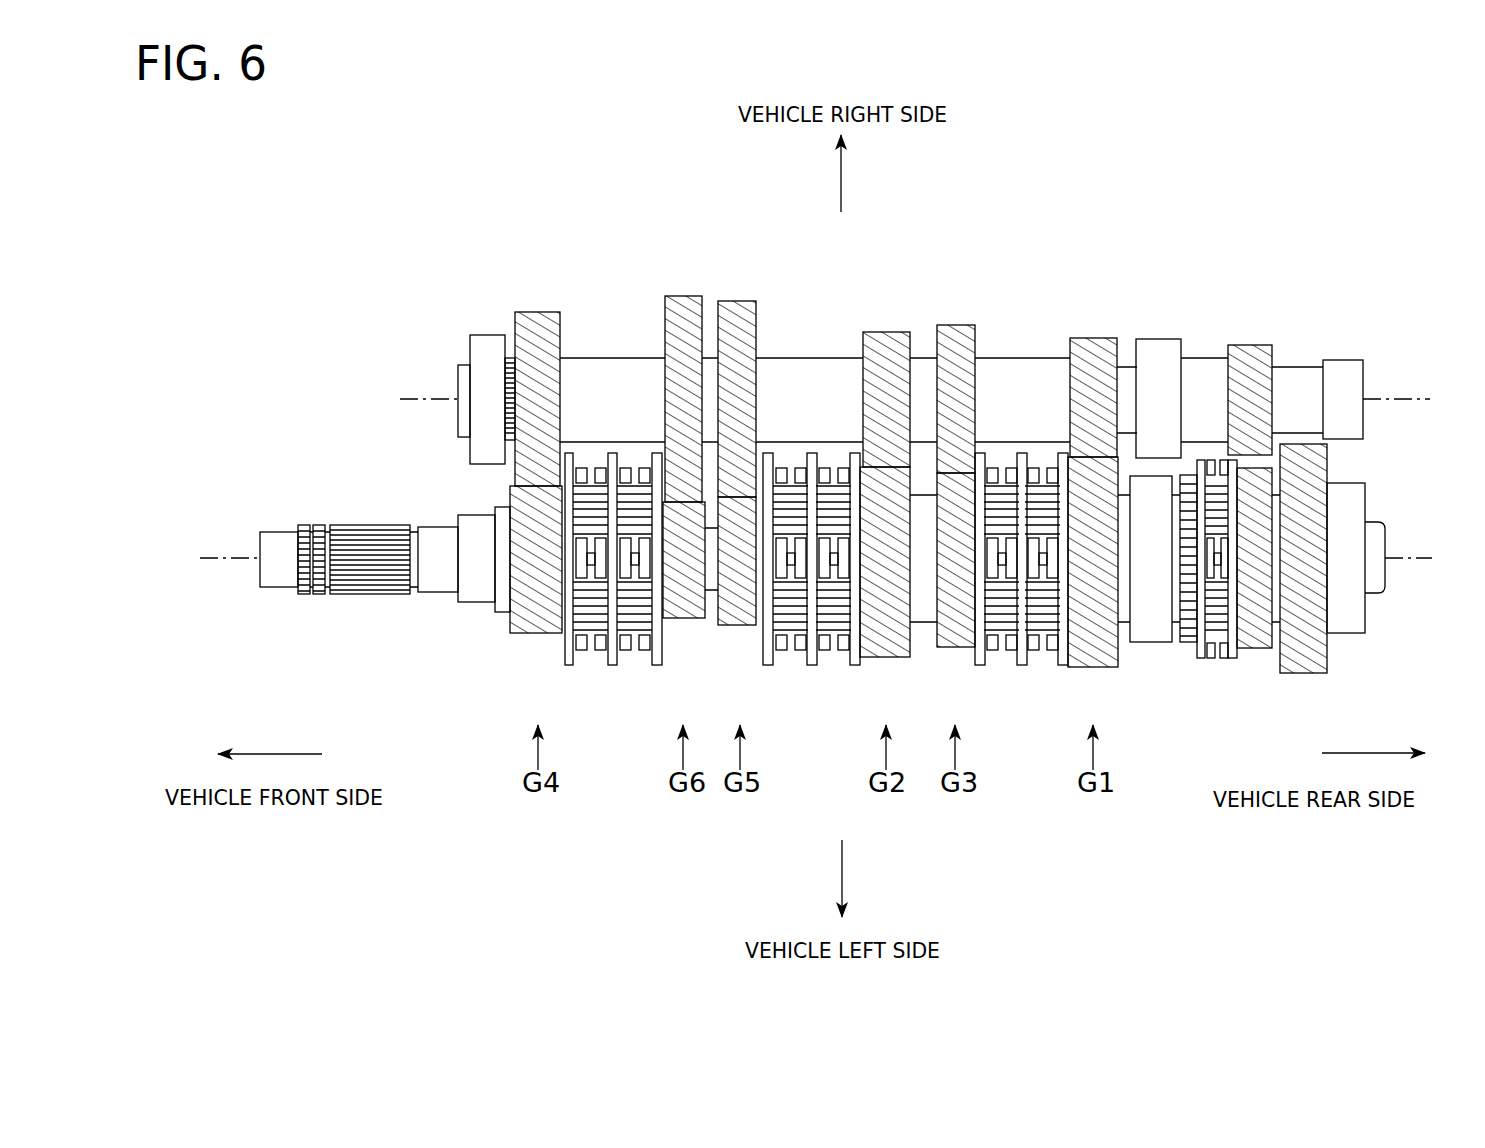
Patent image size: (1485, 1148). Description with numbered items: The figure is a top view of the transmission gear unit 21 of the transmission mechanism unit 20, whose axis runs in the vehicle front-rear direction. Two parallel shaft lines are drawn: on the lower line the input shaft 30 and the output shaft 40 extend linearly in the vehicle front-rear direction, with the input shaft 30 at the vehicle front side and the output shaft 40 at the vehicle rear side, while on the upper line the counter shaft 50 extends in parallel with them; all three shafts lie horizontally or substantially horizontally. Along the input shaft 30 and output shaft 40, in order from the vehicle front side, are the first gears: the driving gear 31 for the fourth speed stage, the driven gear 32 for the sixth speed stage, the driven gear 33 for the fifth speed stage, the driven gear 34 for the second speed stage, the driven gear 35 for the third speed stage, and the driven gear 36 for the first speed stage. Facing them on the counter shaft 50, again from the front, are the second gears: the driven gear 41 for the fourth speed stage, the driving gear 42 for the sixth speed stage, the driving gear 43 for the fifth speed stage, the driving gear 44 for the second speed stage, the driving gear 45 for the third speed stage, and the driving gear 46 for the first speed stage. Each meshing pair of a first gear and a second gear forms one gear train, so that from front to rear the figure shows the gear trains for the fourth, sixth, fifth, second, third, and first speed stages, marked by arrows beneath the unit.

The transmission mechanism unit 20 is at (457, 668).
The transmission gear unit 21 is at (487, 683).
The input shaft 30 is at (281, 590).
The driving gear for the fourth speed stage 31 is at (541, 635).
The driven gear for the sixth speed stage 32 is at (688, 620).
The driven gear for the fifth speed stage 33 is at (742, 627).
The driven gear for the second speed stage 34 is at (888, 658).
The driven gear for the third speed stage 35 is at (956, 648).
The driven gear for the first speed stage 36 is at (1098, 668).
The output shaft 40 is at (1375, 593).
The driven gear for the fourth speed stage 41 is at (537, 311).
The driving gear for the sixth speed stage 42 is at (683, 296).
The driving gear for the fifth speed stage 43 is at (737, 301).
The driving gear for the second speed stage 44 is at (886, 332).
The driving gear for the third speed stage 45 is at (955, 325).
The driving gear for the first speed stage 46 is at (1094, 338).
The counter shaft 50 is at (458, 425).